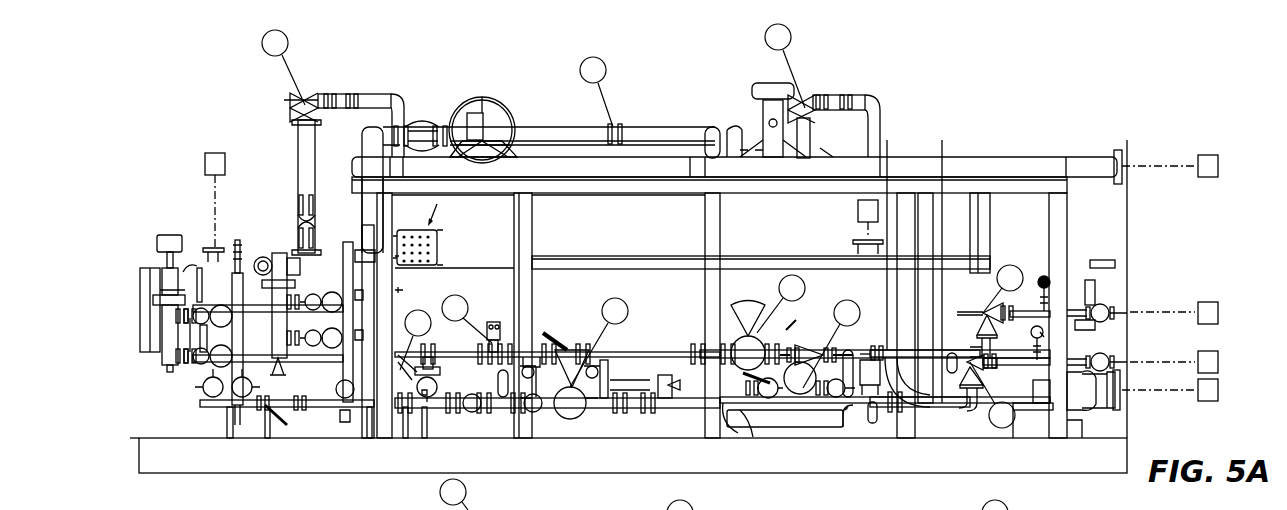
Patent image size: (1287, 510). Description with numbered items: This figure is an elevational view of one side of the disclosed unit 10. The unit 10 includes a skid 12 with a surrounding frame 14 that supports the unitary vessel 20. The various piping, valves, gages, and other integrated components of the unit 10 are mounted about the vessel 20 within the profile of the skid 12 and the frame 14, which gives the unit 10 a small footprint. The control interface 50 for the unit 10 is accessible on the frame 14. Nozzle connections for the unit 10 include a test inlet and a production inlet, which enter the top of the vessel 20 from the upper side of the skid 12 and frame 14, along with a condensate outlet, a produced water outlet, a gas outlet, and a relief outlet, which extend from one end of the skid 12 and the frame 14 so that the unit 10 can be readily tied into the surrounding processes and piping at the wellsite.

The unit 10 is at (141, 86).
The skid 12 is at (277, 473).
The frame 14 is at (692, 193).
The unitary vessel 20 is at (604, 268).
The control interface 50 is at (437, 239).